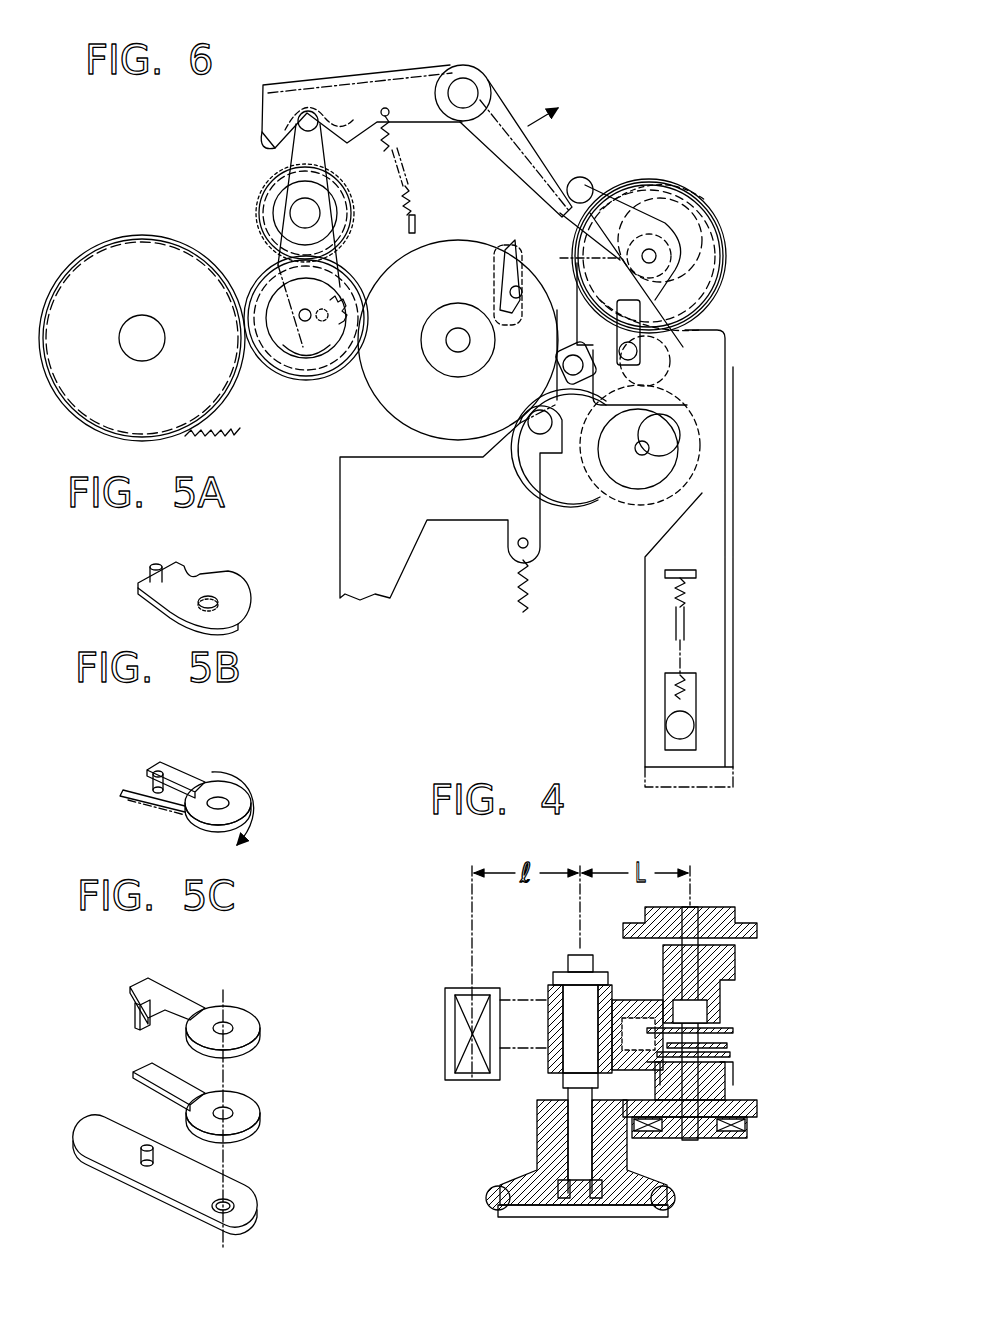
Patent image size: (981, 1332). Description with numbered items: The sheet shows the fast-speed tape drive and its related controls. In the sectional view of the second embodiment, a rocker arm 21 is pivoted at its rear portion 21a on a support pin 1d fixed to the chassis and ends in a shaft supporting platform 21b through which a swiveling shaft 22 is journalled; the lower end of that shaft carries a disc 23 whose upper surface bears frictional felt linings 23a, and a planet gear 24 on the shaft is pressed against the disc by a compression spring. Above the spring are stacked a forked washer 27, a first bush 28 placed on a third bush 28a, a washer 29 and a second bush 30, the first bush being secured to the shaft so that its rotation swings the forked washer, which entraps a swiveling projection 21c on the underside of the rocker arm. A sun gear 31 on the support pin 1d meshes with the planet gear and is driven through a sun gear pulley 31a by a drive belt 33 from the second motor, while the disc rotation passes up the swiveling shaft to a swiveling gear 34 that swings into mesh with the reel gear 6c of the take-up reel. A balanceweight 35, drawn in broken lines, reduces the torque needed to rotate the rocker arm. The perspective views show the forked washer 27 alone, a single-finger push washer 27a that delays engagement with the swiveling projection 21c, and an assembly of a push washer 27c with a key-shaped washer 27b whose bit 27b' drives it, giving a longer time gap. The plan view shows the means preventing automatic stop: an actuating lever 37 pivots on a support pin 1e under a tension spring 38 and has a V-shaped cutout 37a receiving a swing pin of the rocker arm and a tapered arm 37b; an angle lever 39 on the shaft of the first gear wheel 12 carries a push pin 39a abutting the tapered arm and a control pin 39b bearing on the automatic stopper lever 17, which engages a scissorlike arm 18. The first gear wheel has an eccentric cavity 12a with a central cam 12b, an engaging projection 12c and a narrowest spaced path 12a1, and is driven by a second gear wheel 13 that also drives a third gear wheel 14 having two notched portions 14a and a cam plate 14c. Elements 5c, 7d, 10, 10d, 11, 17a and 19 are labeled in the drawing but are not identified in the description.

In FIG. 4, the support pin 1d is at (580, 987).
In FIG. 6, the support pin 1e is at (470, 93).
In FIG. 6, the take-up disk 5c is at (128, 257).
In FIG. 6, the reel gear 6c is at (372, 377).
In FIG. 6, the cam follower 7d is at (660, 187).
In FIG. 6, the frame 10 is at (705, 550).
In FIG. 6, the pin 10d is at (570, 354).
In FIG. 6, the spring holder 11 is at (690, 605).
In FIG. 6, the first gear wheel 12 is at (728, 251).
In FIG. 6, the eccentric cavity 12a is at (712, 298).
In FIG. 6, the narrowest spaced path 12a1 is at (725, 276).
In FIG. 6, the cam 12b is at (706, 215).
In FIG. 6, the engaging projection 12c is at (707, 325).
In FIG. 6, the second gear wheel 13 is at (650, 354).
In FIG. 6, the third gear wheel 14 is at (592, 467).
In FIG. 6, the notched portions 14a is at (712, 394).
In FIG. 6, the cam plate 14c is at (643, 457).
In FIG. 6, the automatic stopper lever 17 is at (522, 370).
In FIG. 6, the slot 17a is at (506, 265).
In FIG. 6, the scissorlike arm 18 is at (498, 287).
In FIG. 6, the plate 19 is at (478, 508).
In FIG. 6, the rocker arm 21 is at (334, 267).
In FIG. 4, the rocker arm 21 is at (617, 998).
In FIG. 4, the rear portion 21a is at (548, 1070).
In FIG. 4, the shaft supporting platform 21b is at (737, 962).
In FIG. 5A, the swiveling projection 21c is at (155, 566).
In FIG. 5B, the swiveling projection 21c is at (160, 772).
In FIG. 5C, the swiveling projection 21c is at (140, 1162).
In FIG. 4, the swiveling shaft 22 is at (690, 1141).
In FIG. 4, the disc 23 is at (736, 1139).
In FIG. 4, the frictional felt linings 23a is at (748, 1127).
In FIG. 4, the planet gear 24 is at (742, 908).
In FIG. 5A, the forked washer 27 is at (205, 587).
In FIG. 4, the forked washer 27 is at (733, 1057).
In FIG. 5B, the push washer 27a is at (192, 783).
In FIG. 5C, the key-shaped washer 27b is at (195, 993).
In FIG. 5C, the bit 27b' is at (109, 1020).
In FIG. 5C, the push washer 27c is at (200, 1101).
In FIG. 4, the first bush 28 is at (735, 1030).
In FIG. 4, the third bush 28a is at (730, 1045).
In FIG. 4, the washer 29 is at (660, 1076).
In FIG. 4, the second bush 30 is at (725, 1076).
In FIG. 6, the sun gear 31 is at (338, 204).
In FIG. 4, the sun gear 31 is at (537, 1120).
In FIG. 4, the sun gear pulley 31a is at (642, 1219).
In FIG. 6, the drive belt 33 is at (262, 206).
In FIG. 4, the drive belt 33 is at (490, 1199).
In FIG. 6, the swiveling gear 34 is at (348, 296).
In FIG. 4, the balanceweight 35 is at (440, 990).
In FIG. 6, the actuating lever 37 is at (425, 70).
In FIG. 6, the V-shaped cutout 37a is at (262, 149).
In FIG. 6, the tapered arm 37b is at (563, 180).
In FIG. 6, the tension spring 38 is at (405, 197).
In FIG. 6, the angle lever 39 is at (640, 224).
In FIG. 6, the push pin 39a is at (590, 184).
In FIG. 6, the control pin 39b is at (535, 436).